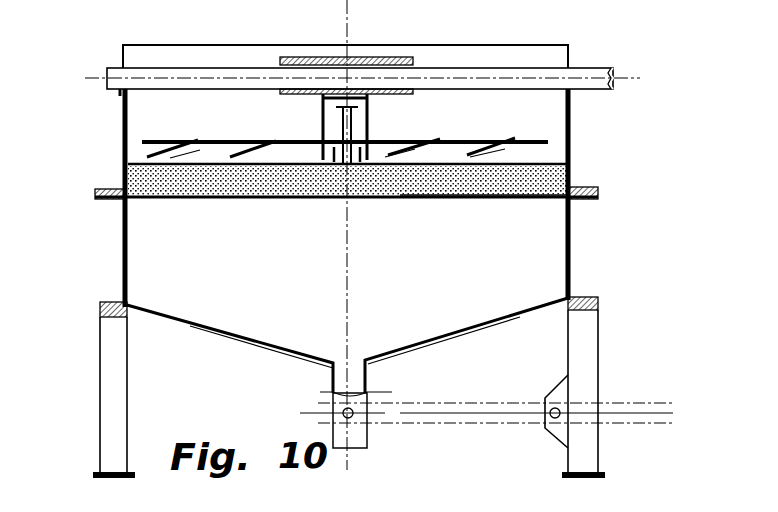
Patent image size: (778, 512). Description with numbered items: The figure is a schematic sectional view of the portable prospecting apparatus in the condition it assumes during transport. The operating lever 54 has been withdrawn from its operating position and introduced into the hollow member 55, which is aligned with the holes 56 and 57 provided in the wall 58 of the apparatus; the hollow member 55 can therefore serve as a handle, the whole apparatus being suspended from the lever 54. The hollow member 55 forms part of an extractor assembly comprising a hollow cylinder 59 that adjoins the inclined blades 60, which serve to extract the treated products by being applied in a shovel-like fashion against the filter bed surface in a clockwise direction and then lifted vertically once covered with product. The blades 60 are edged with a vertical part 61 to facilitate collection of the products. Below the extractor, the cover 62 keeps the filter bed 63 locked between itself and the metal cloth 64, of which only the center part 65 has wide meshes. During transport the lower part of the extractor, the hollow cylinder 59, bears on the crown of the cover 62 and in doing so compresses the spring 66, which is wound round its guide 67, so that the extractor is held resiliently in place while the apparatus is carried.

The operating lever 54 is at (192, 89).
The hollow member 55 is at (372, 57).
The hole 56 is at (570, 95).
The hole 57 is at (122, 92).
The wall 58 is at (572, 150).
The hollow cylinder 59 is at (372, 98).
The inclined blades 60 is at (477, 146).
The vertical part 61 is at (323, 138).
The cover 62 is at (138, 164).
The filter bed 63 is at (510, 197).
The metal cloth 64 is at (180, 197).
The center part 65 is at (330, 199).
The spring 66 is at (335, 155).
The guide 67 is at (353, 116).